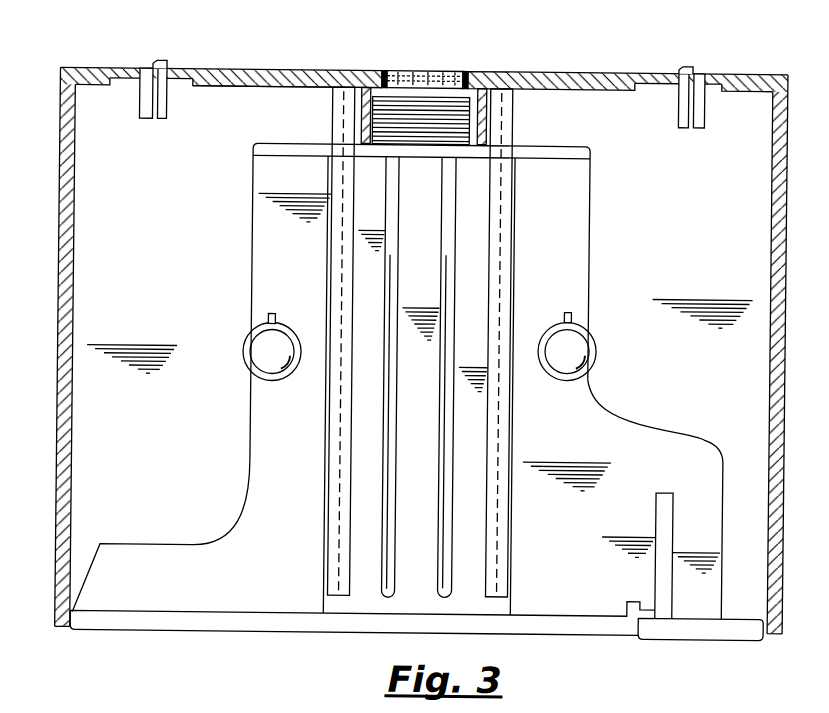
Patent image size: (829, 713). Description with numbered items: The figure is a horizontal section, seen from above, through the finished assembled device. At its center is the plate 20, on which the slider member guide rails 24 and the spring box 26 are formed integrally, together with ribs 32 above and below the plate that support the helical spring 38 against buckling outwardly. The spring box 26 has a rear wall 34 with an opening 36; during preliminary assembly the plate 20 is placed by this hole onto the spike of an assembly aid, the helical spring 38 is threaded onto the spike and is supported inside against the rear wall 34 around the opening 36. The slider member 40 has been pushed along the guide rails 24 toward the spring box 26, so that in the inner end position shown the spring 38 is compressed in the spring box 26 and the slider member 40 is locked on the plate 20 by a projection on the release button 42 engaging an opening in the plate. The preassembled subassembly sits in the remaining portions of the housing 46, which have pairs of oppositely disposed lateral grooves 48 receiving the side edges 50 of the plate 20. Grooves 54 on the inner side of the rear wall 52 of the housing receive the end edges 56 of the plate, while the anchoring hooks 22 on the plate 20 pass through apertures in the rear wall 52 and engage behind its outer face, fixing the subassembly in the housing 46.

The plate 20 is at (424, 81).
The anchoring hooks 22 is at (159, 62).
The slider member guide rails 24 is at (337, 272).
The spring box 26 is at (488, 110).
The ribs 32 is at (442, 440).
The rear wall of the spring box 34 is at (378, 88).
The opening 36 is at (386, 91).
The helical spring 38 is at (421, 101).
The slider member 40 is at (578, 241).
The release button 42 is at (665, 634).
The housing 46 is at (414, 327).
The lateral grooves 48 is at (65, 193).
The side edges of the plate 50 is at (414, 331).
The rear wall of the housing 52 is at (284, 74).
The grooves 54 is at (215, 90).
The end edges of the plates 56 is at (171, 74).